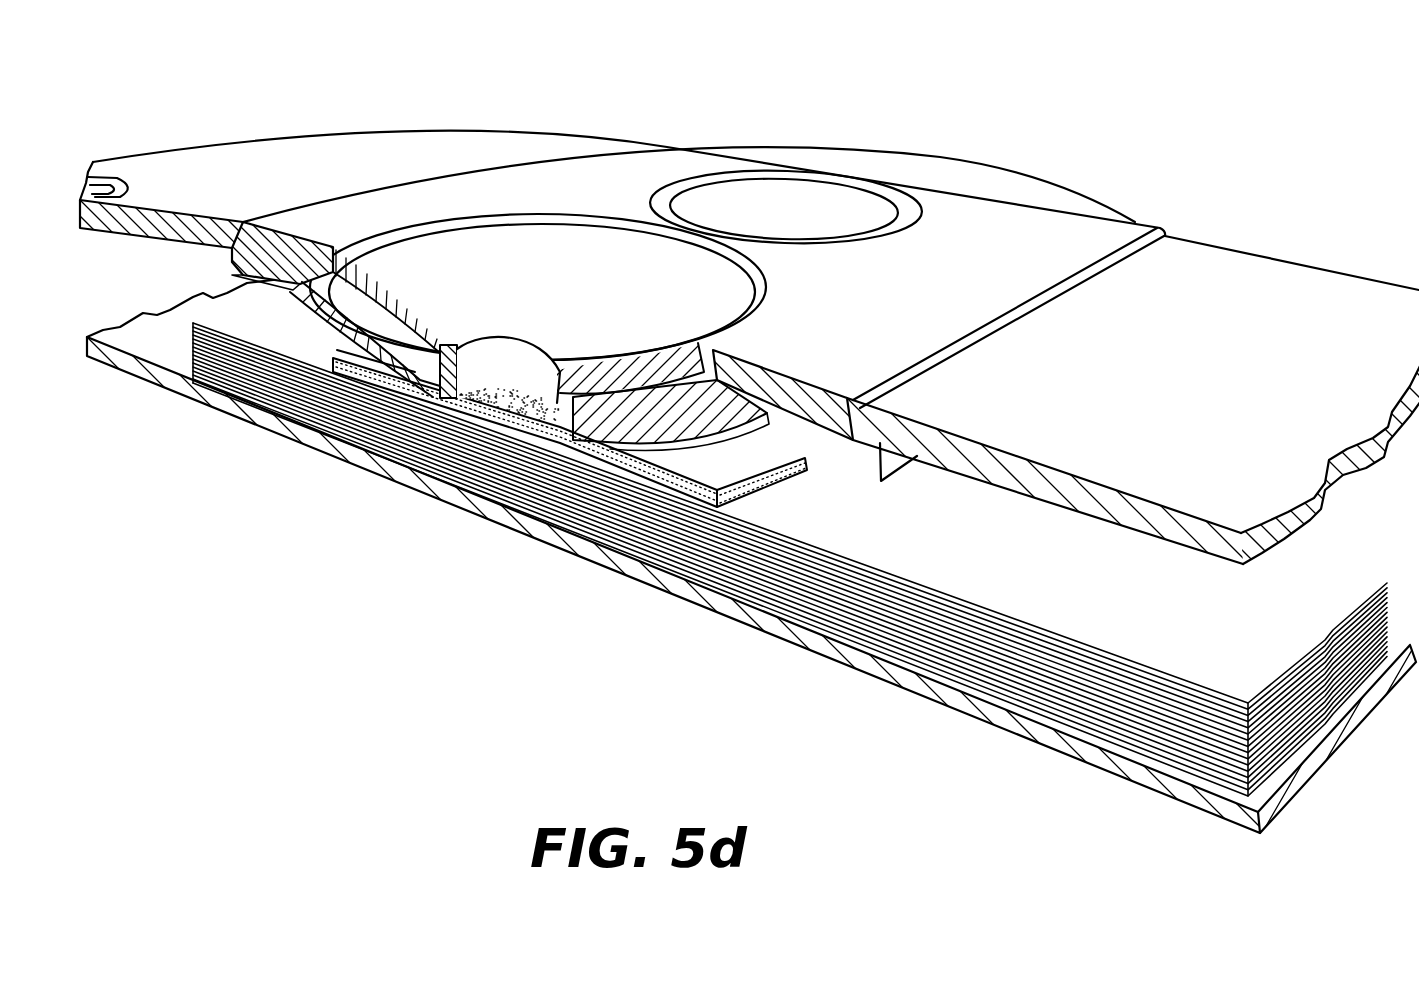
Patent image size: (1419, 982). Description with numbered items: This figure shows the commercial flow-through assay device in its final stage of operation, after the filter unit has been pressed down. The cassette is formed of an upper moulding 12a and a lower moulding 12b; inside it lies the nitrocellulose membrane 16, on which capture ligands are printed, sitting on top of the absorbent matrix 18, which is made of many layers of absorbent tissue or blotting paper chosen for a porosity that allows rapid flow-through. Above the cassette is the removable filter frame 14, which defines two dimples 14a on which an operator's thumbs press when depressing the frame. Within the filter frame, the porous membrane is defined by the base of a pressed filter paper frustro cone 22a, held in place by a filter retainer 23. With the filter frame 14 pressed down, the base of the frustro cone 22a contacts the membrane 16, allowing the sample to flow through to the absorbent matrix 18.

The upper moulding 12a is at (1260, 280).
The lower moulding 12b is at (822, 640).
The filter frame 14 is at (1037, 233).
The dimple 14a is at (830, 198).
The membrane 16 is at (450, 405).
The absorbent matrix 18 is at (535, 488).
The pressed filter paper frustro cone 22a is at (345, 340).
The filter retainer 23 is at (345, 340).